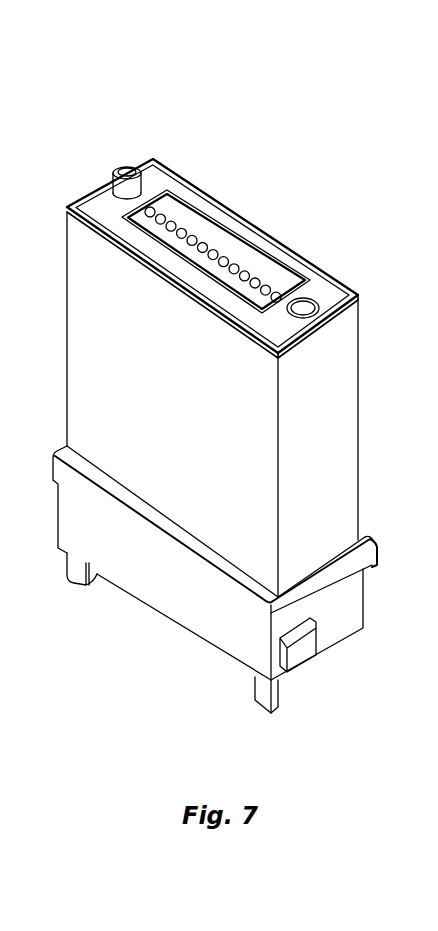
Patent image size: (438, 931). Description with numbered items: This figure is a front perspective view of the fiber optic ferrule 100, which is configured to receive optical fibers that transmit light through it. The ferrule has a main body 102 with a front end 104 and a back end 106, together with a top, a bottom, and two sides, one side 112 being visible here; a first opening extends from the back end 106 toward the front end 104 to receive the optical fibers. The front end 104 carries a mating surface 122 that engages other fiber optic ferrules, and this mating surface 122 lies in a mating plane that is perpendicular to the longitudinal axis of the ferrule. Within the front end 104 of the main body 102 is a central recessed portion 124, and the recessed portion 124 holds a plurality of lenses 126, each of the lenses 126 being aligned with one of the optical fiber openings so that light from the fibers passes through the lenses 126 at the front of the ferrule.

The fiber optic ferrule 100 is at (313, 137).
The main body 102 is at (360, 424).
The front end 104 is at (343, 278).
The back end 106 is at (188, 401).
The side 112 is at (345, 493).
The mating surface 122 is at (155, 172).
The central recessed portion 124 is at (233, 234).
The lenses 126 is at (283, 278).